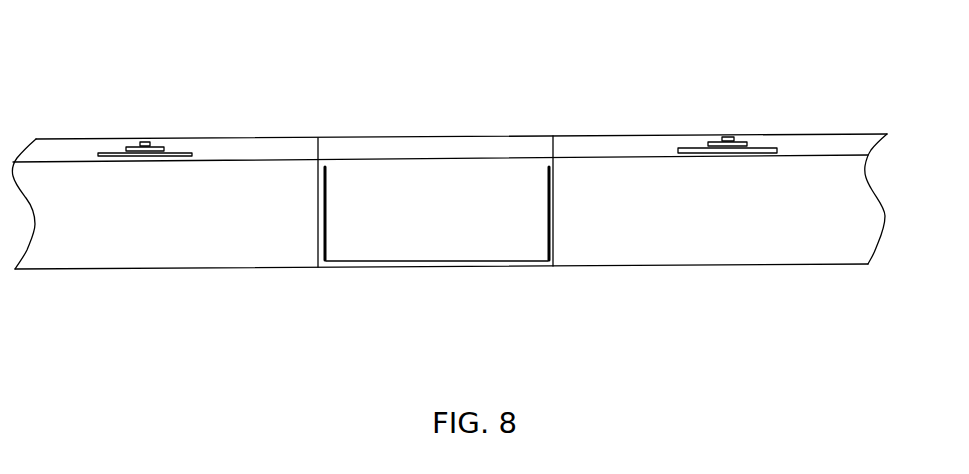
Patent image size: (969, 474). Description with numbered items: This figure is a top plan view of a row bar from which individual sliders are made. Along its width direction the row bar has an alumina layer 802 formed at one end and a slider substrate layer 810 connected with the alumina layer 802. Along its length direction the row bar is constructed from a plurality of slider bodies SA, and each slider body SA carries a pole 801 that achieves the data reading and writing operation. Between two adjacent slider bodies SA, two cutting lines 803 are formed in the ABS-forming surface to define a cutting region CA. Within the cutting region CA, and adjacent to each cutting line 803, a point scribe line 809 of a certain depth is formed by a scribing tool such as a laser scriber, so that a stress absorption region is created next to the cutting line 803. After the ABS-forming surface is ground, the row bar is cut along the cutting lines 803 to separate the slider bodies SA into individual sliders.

The pole 801 is at (147, 136).
The alumina layer 802 is at (288, 148).
The cutting lines 803 is at (550, 261).
The point scribe line 809 is at (327, 170).
The slider substrate layer 810 is at (752, 230).
The slider bodies SA is at (85, 230).
The cutting region CA is at (497, 195).